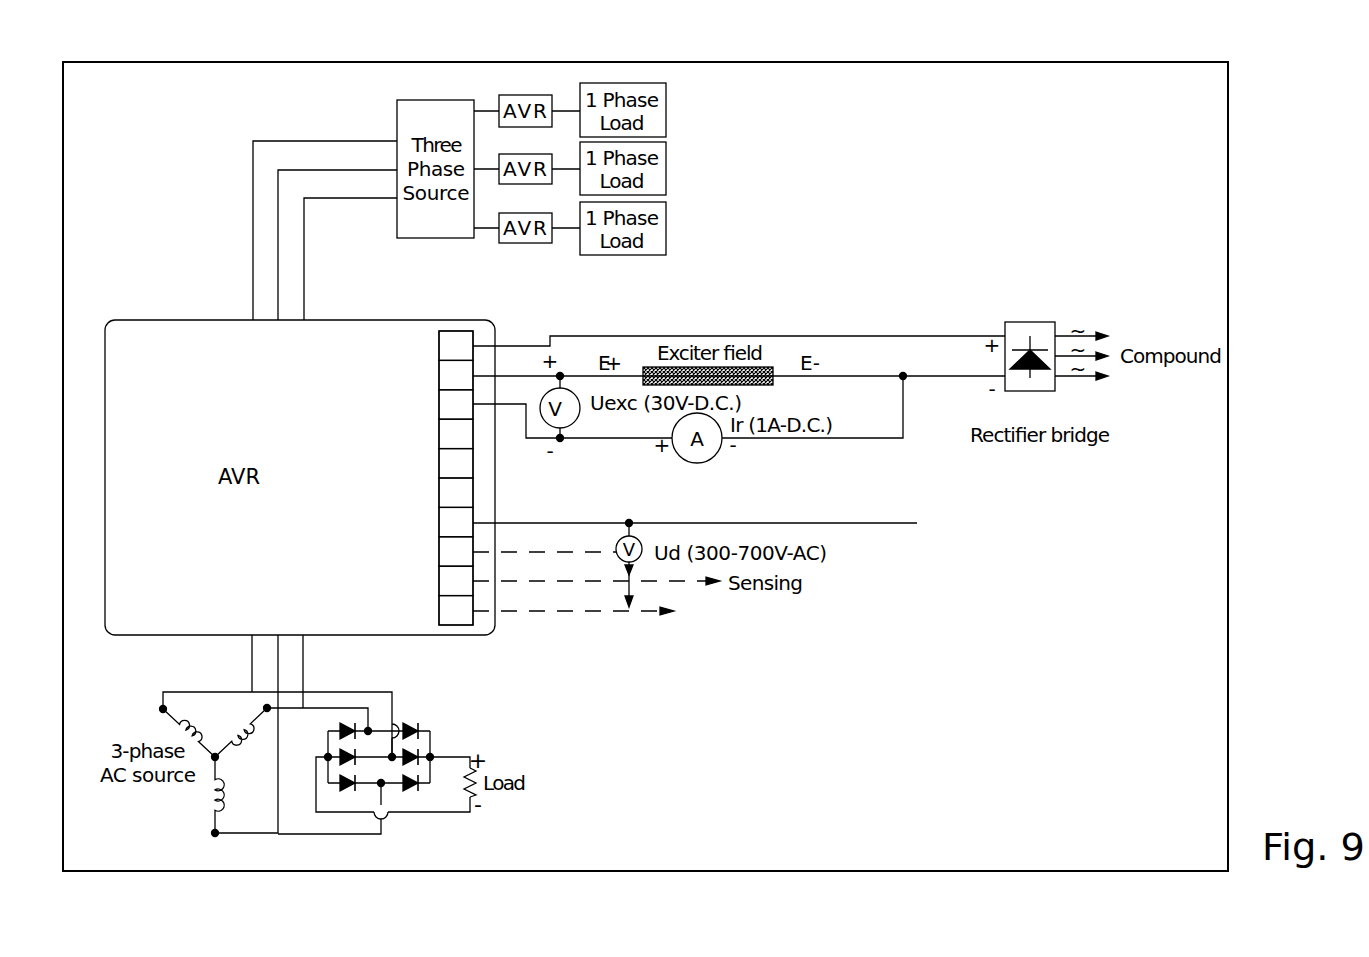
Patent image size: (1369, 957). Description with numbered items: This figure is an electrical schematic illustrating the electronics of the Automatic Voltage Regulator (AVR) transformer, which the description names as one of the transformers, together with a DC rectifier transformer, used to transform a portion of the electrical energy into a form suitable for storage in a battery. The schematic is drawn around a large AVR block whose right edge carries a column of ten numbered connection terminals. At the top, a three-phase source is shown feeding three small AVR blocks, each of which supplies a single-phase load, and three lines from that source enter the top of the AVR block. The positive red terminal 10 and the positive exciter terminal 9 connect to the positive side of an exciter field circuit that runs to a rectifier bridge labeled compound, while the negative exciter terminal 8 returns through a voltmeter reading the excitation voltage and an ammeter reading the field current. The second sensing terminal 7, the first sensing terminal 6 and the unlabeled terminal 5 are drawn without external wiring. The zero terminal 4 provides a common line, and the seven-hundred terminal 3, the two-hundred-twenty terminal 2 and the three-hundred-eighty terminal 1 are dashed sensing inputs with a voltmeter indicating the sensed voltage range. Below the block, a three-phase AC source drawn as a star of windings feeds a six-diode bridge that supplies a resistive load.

The +RED terminal 10 is at (425, 345).
The +E terminal 9 is at (440, 374).
The -E terminal 8 is at (442, 404).
The S2 terminal 7 is at (440, 433).
The S1 terminal 6 is at (440, 463).
The terminal 5 is at (456, 492).
The 0 terminal 4 is at (446, 521).
The 700 terminal 3 is at (436, 551).
The 220 terminal 2 is at (436, 580).
The 380 terminal 1 is at (436, 610).